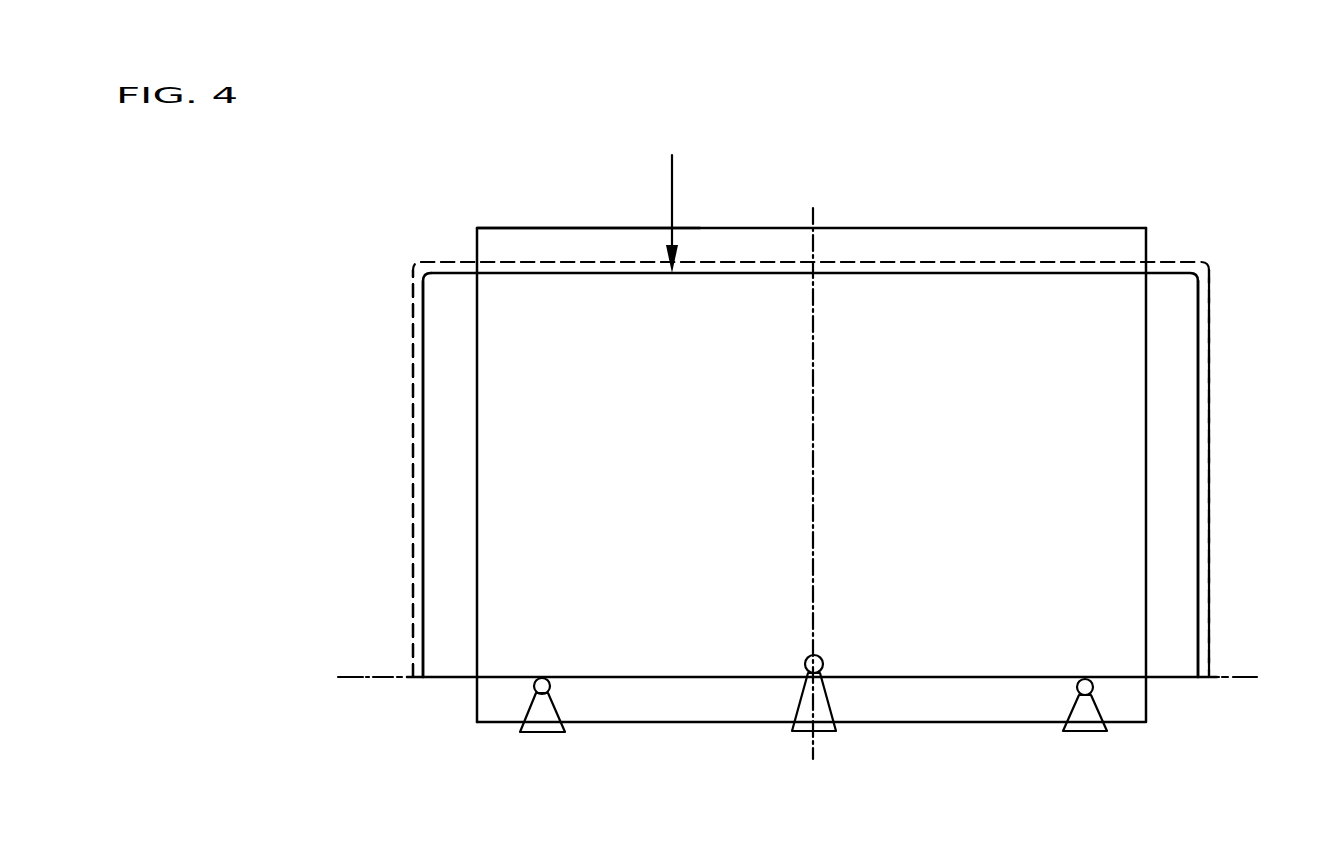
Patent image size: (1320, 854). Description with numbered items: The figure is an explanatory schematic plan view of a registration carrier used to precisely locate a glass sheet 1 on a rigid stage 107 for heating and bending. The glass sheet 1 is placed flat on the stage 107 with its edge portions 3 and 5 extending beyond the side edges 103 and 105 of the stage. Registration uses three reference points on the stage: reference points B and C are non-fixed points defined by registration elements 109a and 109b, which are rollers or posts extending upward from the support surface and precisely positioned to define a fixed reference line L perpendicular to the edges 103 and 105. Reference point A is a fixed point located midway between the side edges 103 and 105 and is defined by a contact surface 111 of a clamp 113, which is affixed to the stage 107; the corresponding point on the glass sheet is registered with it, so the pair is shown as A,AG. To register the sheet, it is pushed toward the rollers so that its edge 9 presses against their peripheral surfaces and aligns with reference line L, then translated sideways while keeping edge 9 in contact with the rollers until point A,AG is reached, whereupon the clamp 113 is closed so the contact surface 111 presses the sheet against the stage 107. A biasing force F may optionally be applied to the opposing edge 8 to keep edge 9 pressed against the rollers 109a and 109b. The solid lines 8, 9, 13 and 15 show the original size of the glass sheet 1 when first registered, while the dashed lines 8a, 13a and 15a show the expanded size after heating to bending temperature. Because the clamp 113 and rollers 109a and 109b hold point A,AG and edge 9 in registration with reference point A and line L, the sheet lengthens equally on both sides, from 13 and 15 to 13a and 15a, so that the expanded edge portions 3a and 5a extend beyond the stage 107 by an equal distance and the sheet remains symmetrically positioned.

The glass sheet 1 is at (1200, 262).
The edge portion 3 is at (440, 473).
The expanded edge portion 3a is at (416, 516).
The edge portion 5 is at (1182, 415).
The expanded edge portion 5a is at (1205, 600).
The opposing edge 8 is at (562, 273).
The expanded opposing edge 8a is at (590, 262).
The edge 9 is at (455, 677).
The side edge line 13 is at (423, 341).
The expanded side edge line 13a is at (413, 412).
The side edge line 15 is at (1200, 473).
The expanded side edge line 15a is at (1209, 527).
The side edge of stage 103 is at (477, 244).
The side edge of stage 105 is at (1146, 240).
The stage 107 is at (752, 300).
The registration element 109a is at (592, 692).
The registration element 109b is at (1147, 666).
The contact surface 111 is at (875, 689).
The clamp 113 is at (805, 705).
The biasing force F is at (672, 195).
The reference line L is at (376, 677).
The fixed reference points A,AG is at (822, 658).
The reference point B is at (542, 679).
The reference point C is at (1085, 680).